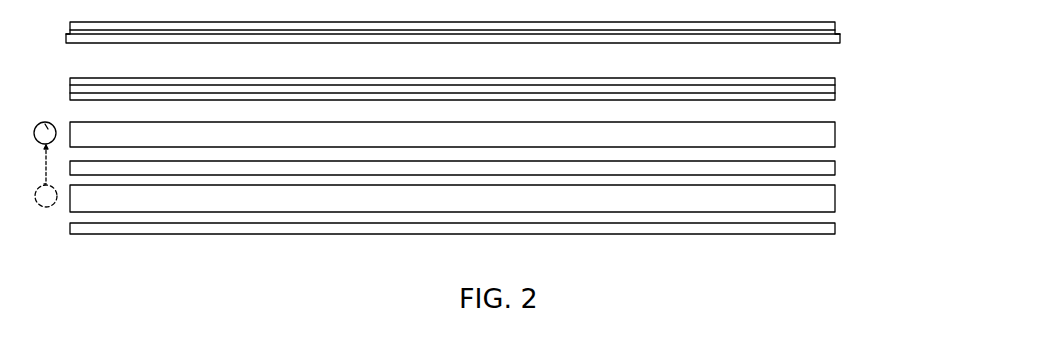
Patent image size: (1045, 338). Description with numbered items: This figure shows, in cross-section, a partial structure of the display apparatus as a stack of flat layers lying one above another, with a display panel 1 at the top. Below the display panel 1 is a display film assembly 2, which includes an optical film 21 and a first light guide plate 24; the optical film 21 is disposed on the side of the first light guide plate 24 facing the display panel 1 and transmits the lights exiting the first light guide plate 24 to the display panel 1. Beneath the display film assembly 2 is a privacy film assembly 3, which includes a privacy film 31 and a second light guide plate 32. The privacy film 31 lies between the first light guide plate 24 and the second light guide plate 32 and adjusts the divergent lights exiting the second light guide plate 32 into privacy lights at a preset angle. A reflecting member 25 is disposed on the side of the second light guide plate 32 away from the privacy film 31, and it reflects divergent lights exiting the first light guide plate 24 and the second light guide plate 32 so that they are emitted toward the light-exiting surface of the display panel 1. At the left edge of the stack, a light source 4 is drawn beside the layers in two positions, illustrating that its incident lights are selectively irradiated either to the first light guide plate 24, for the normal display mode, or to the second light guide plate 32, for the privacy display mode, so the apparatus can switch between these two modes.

The display panel 1 is at (840, 35).
The display film assembly 2 is at (908, 80).
The optical film 21 is at (837, 88).
The first light guide plate 24 is at (837, 136).
The privacy film assembly 3 is at (914, 160).
The privacy film 31 is at (837, 168).
The second light guide plate 32 is at (837, 198).
The reflecting member 25 is at (837, 228).
The light source 4 is at (42, 120).